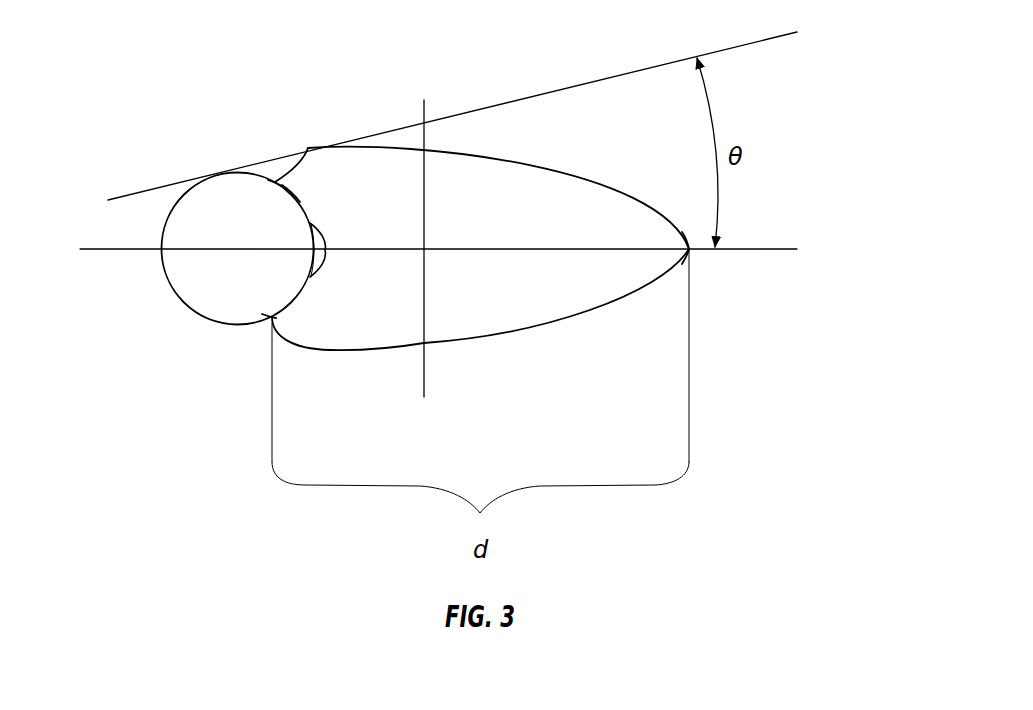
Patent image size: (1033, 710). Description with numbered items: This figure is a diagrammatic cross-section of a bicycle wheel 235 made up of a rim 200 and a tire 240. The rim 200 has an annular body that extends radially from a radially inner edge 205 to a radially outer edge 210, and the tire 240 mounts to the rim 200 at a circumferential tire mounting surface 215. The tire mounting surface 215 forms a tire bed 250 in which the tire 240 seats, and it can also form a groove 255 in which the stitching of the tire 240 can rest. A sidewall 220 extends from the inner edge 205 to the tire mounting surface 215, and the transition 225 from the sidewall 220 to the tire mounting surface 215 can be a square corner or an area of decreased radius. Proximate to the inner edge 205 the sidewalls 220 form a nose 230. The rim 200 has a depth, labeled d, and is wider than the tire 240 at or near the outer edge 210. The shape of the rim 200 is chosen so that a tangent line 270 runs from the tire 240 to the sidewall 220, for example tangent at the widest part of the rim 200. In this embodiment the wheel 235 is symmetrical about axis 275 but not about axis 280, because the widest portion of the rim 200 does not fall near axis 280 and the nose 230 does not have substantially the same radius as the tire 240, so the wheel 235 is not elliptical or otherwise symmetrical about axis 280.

The rim 200 is at (438, 269).
The radially inner edge 205 is at (691, 248).
The radially outer edge 210 is at (272, 174).
The tire mounting surface 215 is at (308, 150).
The sidewall 220 is at (573, 175).
The transition 225 is at (267, 340).
The nose 230 is at (698, 262).
The bicycle wheel 235 is at (428, 286).
The tire 240 is at (170, 236).
The tire bed 250 is at (302, 203).
The groove 255 is at (325, 250).
The tangent line 270 is at (160, 183).
The axis 275 is at (762, 250).
The axis 280 is at (425, 367).